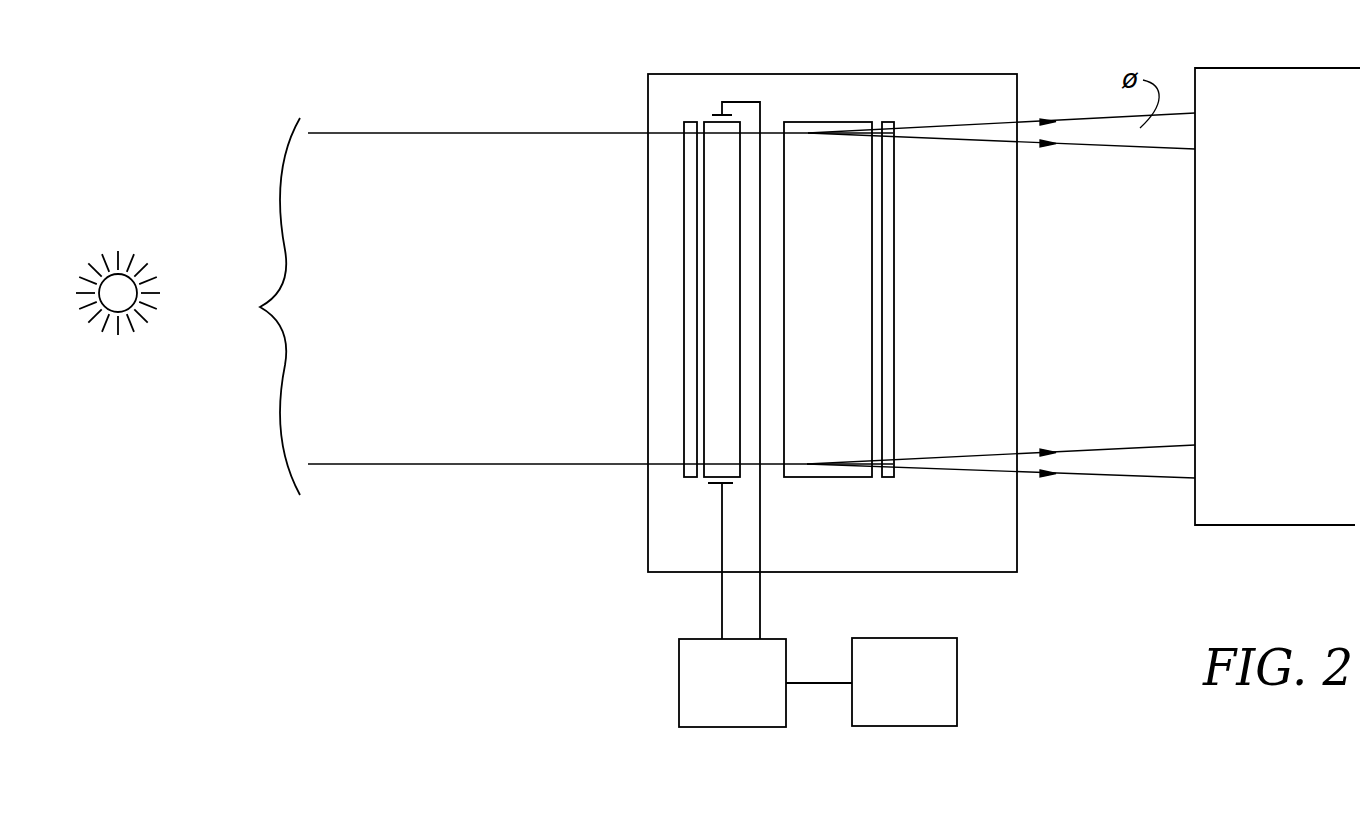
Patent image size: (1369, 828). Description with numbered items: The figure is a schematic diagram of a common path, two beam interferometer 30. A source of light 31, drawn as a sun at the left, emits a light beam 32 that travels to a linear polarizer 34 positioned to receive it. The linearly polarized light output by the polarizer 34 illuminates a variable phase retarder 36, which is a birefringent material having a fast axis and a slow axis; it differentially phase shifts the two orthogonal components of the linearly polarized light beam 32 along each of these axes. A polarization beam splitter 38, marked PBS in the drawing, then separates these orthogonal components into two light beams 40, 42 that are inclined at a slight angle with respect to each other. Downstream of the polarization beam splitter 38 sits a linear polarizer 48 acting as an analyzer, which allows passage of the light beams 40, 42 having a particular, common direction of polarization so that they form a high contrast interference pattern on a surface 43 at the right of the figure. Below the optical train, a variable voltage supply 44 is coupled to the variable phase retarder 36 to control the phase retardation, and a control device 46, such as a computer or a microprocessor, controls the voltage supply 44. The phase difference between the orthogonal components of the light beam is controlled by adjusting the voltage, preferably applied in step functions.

The common path, two beam interferometer 30 is at (598, 36).
The source of light 31 is at (115, 327).
The light beam 32 is at (555, 306).
The linear polarizer 34 is at (699, 113).
The variable phase retarder 36 is at (735, 385).
The polarization beam splitter 38 is at (815, 118).
The light beam 40 is at (1095, 118).
The light beam 42 is at (1138, 150).
The surface 43 is at (1195, 256).
The variable voltage supply 44 is at (679, 677).
The control device 46 is at (887, 727).
The linear polarizer (analyzer) 48 is at (887, 118).